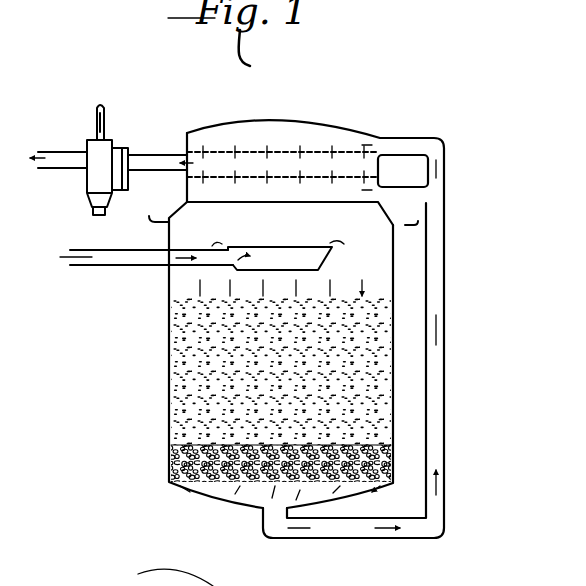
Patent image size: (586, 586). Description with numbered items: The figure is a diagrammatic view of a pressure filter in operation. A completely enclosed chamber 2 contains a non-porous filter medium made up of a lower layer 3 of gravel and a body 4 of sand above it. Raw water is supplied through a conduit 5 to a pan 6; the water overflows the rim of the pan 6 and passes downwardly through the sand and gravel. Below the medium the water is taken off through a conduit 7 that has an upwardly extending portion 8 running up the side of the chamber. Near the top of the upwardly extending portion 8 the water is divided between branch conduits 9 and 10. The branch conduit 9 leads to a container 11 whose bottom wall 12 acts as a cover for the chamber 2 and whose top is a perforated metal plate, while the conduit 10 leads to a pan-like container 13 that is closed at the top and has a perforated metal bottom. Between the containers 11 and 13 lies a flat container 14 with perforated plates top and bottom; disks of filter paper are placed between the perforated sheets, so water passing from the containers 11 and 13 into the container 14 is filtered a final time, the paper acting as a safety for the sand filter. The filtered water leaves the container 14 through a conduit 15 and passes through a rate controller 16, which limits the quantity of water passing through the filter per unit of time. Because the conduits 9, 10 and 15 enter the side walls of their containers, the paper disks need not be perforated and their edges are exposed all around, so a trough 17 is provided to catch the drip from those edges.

The chamber 2 is at (168, 290).
The lower layer of gravel 3 is at (170, 475).
The body of sand 4 is at (192, 375).
The conduit 5 is at (95, 250).
The pan 6 is at (308, 258).
The conduit 7 is at (364, 532).
The upwardly extending portion 8 is at (446, 273).
The branch conduit 9 is at (417, 228).
The branch conduit 10 is at (418, 137).
The container 11 is at (260, 203).
The bottom wall 12 is at (208, 203).
The pan-like container 13 is at (305, 133).
The flat container 14 is at (218, 140).
The conduit 15 is at (158, 155).
The rate controller 16 is at (90, 150).
The trough 17 is at (161, 213).